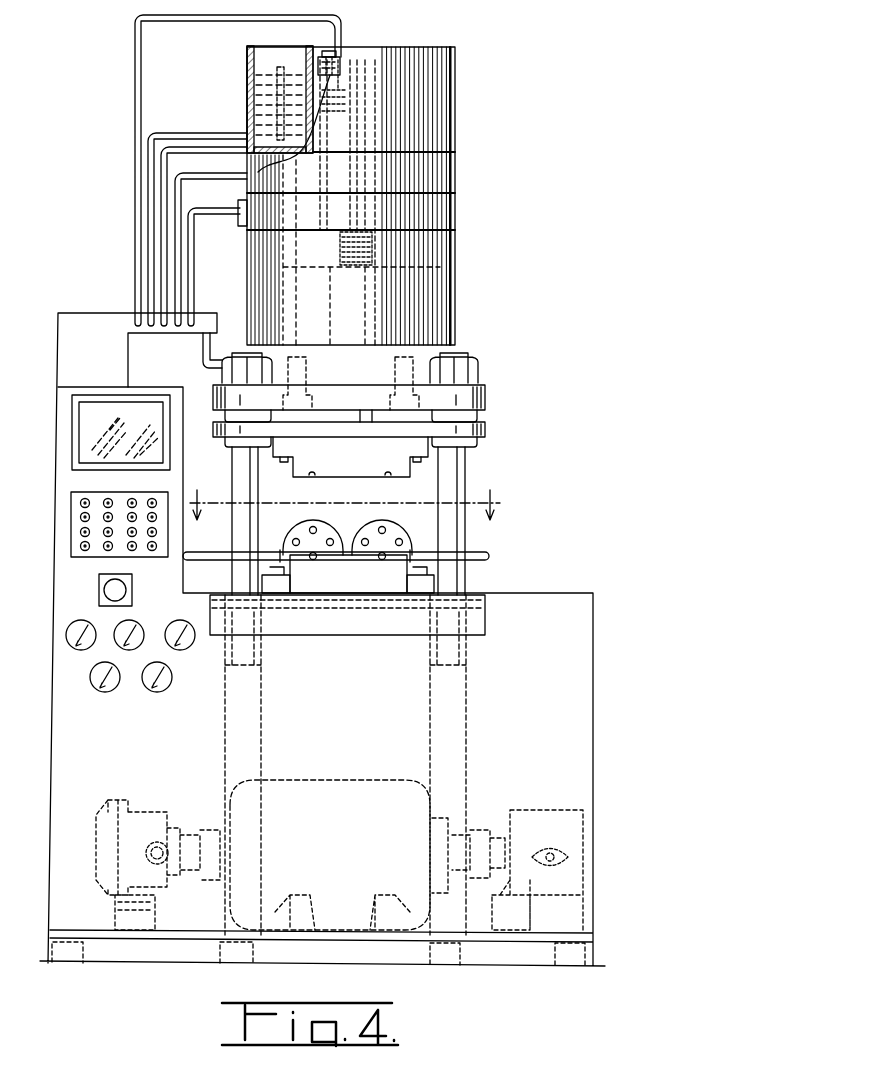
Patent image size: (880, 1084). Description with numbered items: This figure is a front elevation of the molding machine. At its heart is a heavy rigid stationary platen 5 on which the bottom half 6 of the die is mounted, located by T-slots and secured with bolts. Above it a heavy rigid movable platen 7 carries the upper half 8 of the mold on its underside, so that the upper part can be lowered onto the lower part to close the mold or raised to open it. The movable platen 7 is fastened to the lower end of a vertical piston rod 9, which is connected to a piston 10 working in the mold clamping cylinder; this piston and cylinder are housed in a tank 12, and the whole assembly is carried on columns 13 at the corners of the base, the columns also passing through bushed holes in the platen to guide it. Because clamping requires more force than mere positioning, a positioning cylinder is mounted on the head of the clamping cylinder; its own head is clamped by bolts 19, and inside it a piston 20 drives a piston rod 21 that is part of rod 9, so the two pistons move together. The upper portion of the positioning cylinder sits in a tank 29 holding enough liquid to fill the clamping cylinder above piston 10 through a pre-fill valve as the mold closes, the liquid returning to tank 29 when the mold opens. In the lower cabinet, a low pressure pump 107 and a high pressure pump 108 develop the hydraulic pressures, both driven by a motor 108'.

The stationary platen 5 is at (354, 635).
The bottom half of die 6 is at (350, 584).
The movable platen 7 is at (487, 432).
The upper half of the mold 8 is at (350, 465).
The piston rod 9 is at (372, 437).
The piston 10 is at (300, 260).
The tank 12 is at (455, 292).
The columns 13 is at (466, 470).
The bolts 19 is at (316, 170).
The piston 20 is at (384, 57).
The piston rod 21 is at (345, 210).
The tank 29 is at (250, 49).
The pump 107 is at (145, 810).
The motor 108' is at (330, 833).
The pump 108 is at (507, 848).